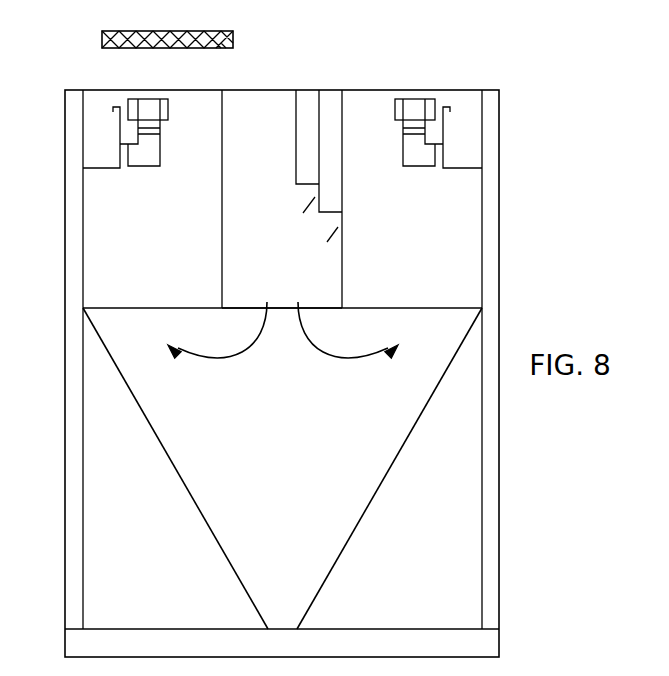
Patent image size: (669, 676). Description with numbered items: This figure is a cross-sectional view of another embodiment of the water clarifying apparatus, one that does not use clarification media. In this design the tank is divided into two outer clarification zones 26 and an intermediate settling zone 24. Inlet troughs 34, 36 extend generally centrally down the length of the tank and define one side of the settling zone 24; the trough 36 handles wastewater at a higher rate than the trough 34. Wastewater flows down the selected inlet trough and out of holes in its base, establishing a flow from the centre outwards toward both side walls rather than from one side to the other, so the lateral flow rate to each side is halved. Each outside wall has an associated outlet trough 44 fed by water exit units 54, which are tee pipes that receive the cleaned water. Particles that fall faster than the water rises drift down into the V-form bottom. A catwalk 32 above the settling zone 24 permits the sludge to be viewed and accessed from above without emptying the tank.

The settling zone 24 is at (289, 237).
The clarification zone 26 is at (135, 236).
The catwalk 32 is at (102, 46).
The trough 34 is at (309, 118).
The trough 36 is at (327, 154).
The outlet trough 44 is at (118, 112).
The water exit unit 54 is at (175, 114).